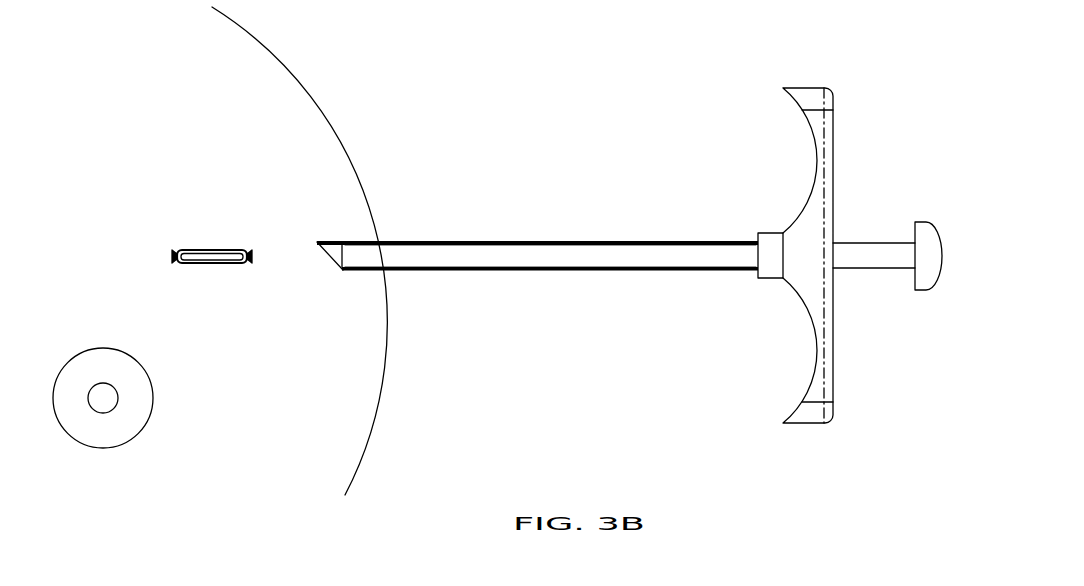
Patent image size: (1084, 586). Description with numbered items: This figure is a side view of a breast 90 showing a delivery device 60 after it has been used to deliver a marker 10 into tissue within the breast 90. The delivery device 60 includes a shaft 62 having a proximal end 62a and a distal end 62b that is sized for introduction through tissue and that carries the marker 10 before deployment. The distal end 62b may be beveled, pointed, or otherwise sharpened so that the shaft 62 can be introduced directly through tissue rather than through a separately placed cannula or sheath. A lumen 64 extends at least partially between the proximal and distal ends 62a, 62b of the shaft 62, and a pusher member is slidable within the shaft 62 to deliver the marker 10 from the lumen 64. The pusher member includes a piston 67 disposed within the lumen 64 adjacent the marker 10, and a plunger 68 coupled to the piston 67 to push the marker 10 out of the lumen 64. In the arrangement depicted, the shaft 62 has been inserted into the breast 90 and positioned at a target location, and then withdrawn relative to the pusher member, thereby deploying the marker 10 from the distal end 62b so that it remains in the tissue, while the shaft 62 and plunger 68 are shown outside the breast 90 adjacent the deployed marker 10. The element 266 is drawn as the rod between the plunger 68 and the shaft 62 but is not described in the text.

The marker 10 is at (206, 239).
The delivery device 60 is at (629, 255).
The shaft 62 is at (537, 241).
The proximal end 62a is at (748, 242).
The distal end 62b is at (333, 242).
The lumen 64 is at (482, 272).
The piston 67 is at (360, 260).
The plunger 68 is at (922, 292).
The breast 90 is at (387, 348).
The plunger rod 266 is at (867, 243).